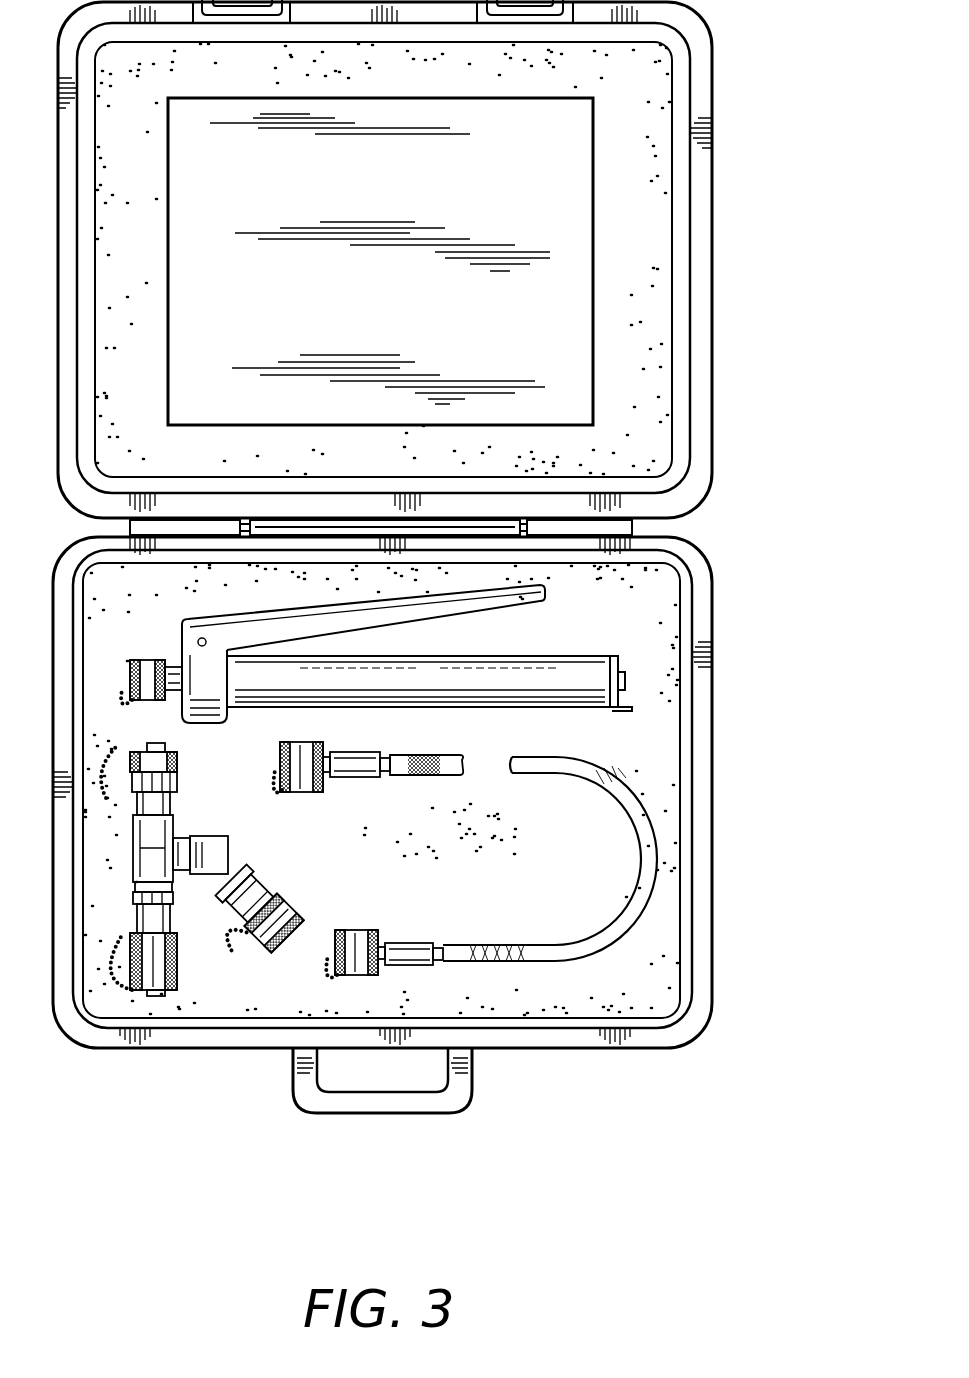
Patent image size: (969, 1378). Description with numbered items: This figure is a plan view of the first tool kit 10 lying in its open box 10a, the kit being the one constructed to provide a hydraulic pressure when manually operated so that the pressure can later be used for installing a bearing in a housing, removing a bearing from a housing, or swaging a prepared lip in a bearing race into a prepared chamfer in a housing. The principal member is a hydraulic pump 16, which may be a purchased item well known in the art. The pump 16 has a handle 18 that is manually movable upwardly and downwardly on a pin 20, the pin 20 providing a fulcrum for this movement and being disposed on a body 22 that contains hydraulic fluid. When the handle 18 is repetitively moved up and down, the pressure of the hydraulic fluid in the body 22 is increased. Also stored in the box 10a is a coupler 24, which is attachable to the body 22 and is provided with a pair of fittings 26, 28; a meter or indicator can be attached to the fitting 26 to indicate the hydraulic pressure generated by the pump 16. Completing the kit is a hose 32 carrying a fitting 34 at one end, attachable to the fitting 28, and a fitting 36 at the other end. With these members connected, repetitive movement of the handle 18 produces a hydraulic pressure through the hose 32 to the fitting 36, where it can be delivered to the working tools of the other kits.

The kit 10 is at (441, 556).
The box 10a is at (712, 755).
The hydraulic pump 16 is at (376, 664).
The handle 18 is at (363, 615).
The pin 20 is at (204, 640).
The body 22 is at (532, 681).
The coupler 24 is at (237, 878).
The fitting 26 is at (300, 913).
The fitting 28 is at (160, 975).
The hose 32 is at (491, 867).
The fitting 34 is at (308, 758).
The fitting 36 is at (355, 930).